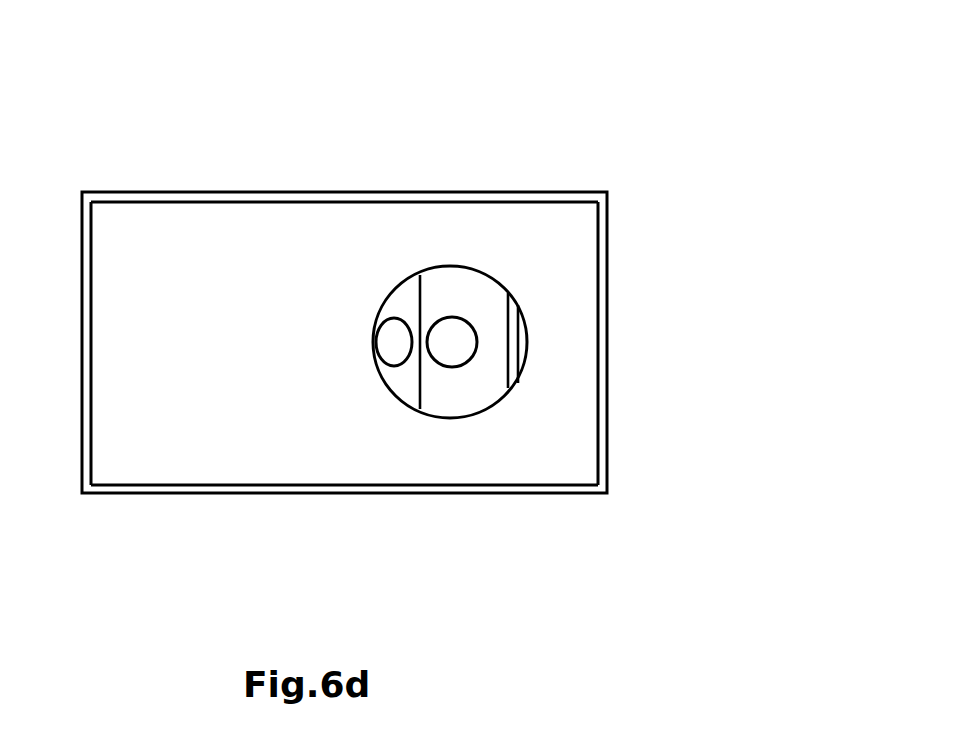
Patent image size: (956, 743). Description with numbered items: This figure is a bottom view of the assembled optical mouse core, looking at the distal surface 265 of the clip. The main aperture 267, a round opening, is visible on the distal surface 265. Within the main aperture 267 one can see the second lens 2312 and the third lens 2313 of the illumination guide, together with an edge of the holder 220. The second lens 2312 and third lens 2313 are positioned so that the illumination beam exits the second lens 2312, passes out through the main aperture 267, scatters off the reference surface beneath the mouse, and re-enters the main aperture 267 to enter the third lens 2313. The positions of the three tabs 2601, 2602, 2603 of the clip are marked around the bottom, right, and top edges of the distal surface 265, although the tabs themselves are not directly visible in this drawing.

The distal surface 265 is at (203, 295).
The tab 2603 is at (345, 183).
The tab 2602 is at (618, 347).
The tab 2601 is at (346, 508).
The main aperture 267 is at (487, 265).
The holder 220 is at (523, 342).
The second lens 2312 is at (393, 345).
The third lens 2313 is at (460, 350).